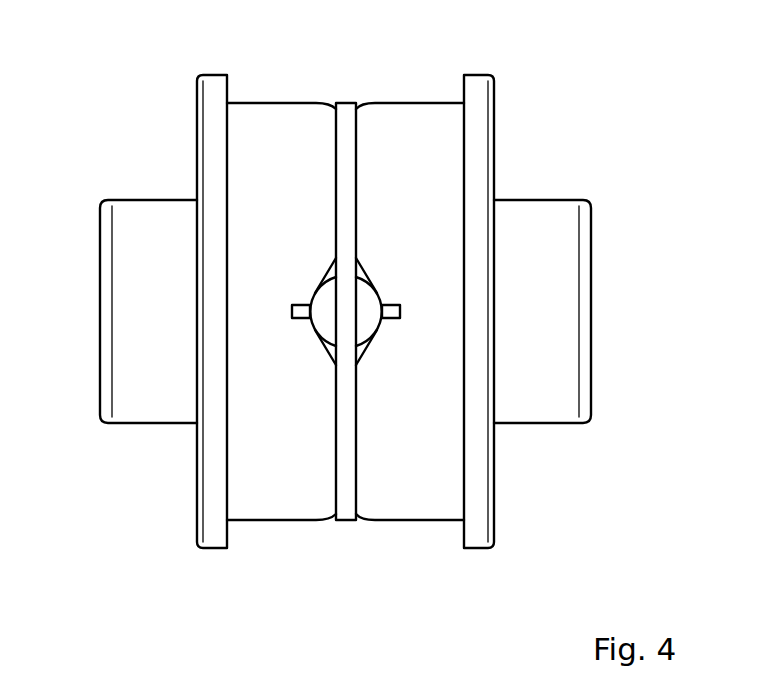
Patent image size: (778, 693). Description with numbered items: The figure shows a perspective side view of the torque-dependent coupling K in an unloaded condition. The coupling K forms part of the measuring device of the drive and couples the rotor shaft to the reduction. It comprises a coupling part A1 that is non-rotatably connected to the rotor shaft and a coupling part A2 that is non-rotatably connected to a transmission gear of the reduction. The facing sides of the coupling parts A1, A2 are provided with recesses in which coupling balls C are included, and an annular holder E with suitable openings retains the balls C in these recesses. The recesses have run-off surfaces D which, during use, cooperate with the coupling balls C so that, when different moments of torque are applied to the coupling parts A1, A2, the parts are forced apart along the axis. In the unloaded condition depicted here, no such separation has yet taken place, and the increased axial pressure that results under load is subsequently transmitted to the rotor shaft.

The torque-dependent coupling K is at (153, 87).
The coupling part A1 is at (435, 503).
The coupling part A2 is at (258, 503).
The annular holder E is at (346, 503).
The run-off surfaces D is at (330, 272).
The coupling balls C is at (323, 312).